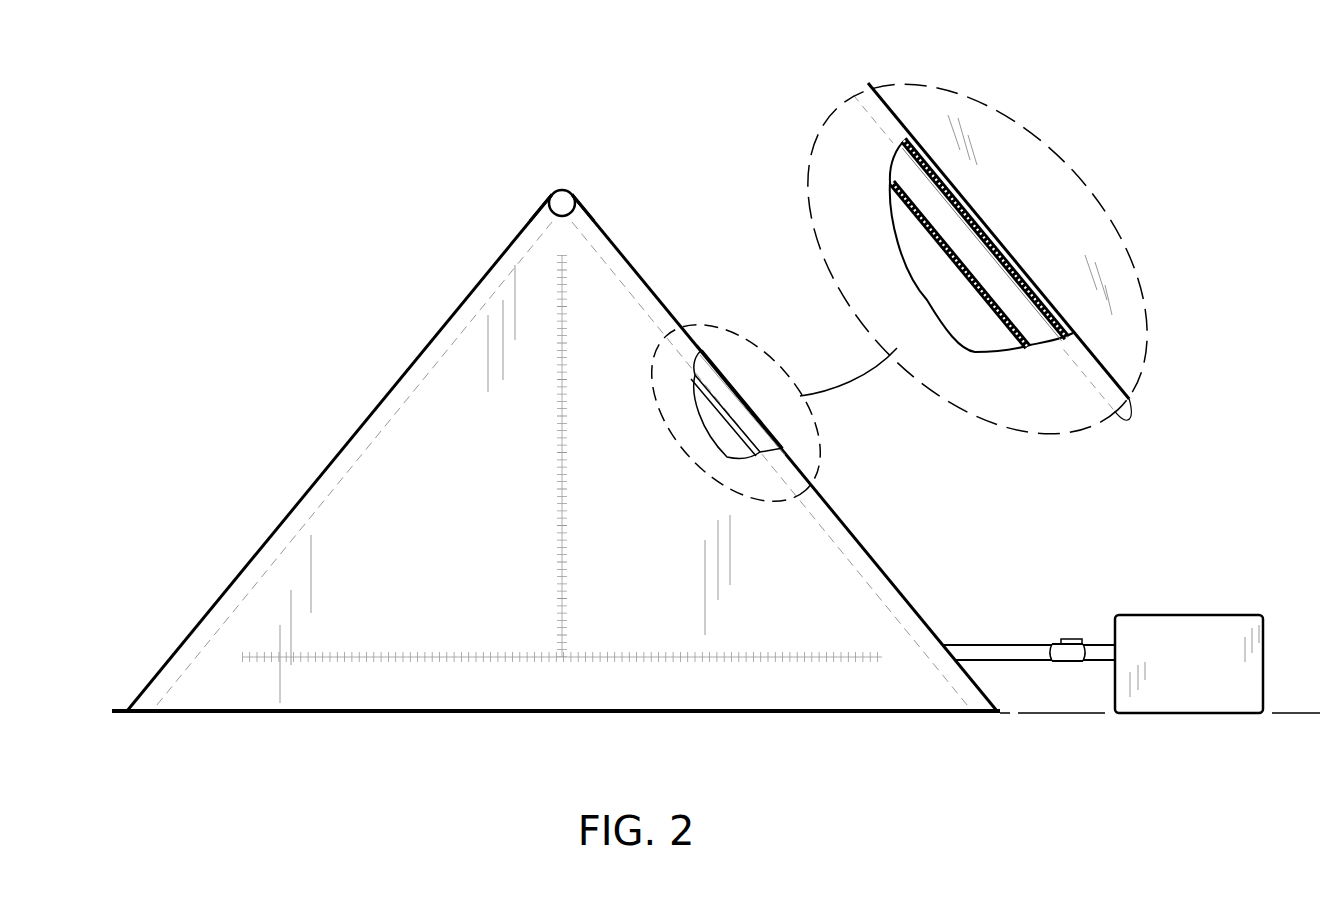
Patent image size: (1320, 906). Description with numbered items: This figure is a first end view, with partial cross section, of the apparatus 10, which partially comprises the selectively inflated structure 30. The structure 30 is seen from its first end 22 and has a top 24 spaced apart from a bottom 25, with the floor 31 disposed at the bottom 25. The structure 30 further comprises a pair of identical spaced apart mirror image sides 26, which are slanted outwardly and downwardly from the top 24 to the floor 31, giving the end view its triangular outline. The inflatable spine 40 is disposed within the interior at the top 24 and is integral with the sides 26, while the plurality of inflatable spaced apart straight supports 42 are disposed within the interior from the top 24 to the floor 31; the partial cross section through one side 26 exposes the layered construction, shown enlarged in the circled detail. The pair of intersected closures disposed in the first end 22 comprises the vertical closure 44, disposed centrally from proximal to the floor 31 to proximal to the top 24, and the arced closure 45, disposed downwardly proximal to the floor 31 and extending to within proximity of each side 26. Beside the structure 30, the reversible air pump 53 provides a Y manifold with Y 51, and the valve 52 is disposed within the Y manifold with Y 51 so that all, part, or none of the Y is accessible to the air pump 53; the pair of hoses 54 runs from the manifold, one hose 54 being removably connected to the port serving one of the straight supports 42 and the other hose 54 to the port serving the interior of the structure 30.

The apparatus 10 is at (365, 217).
The first end 22 is at (748, 719).
The top 24 is at (562, 181).
The bottom 25 is at (503, 719).
The sides 26 is at (482, 267).
The selectively inflated structure 30 is at (286, 447).
The floor 31 is at (379, 712).
The inflatable spine 40 is at (570, 190).
The straight supports 42 is at (428, 348).
The vertical closure 44 is at (563, 598).
The arced closure 45 is at (460, 657).
The Y manifold with Y 51 is at (1105, 645).
The valve 52 is at (1073, 640).
The reversible air pump 53 is at (1180, 616).
The hoses 54 is at (1023, 645).